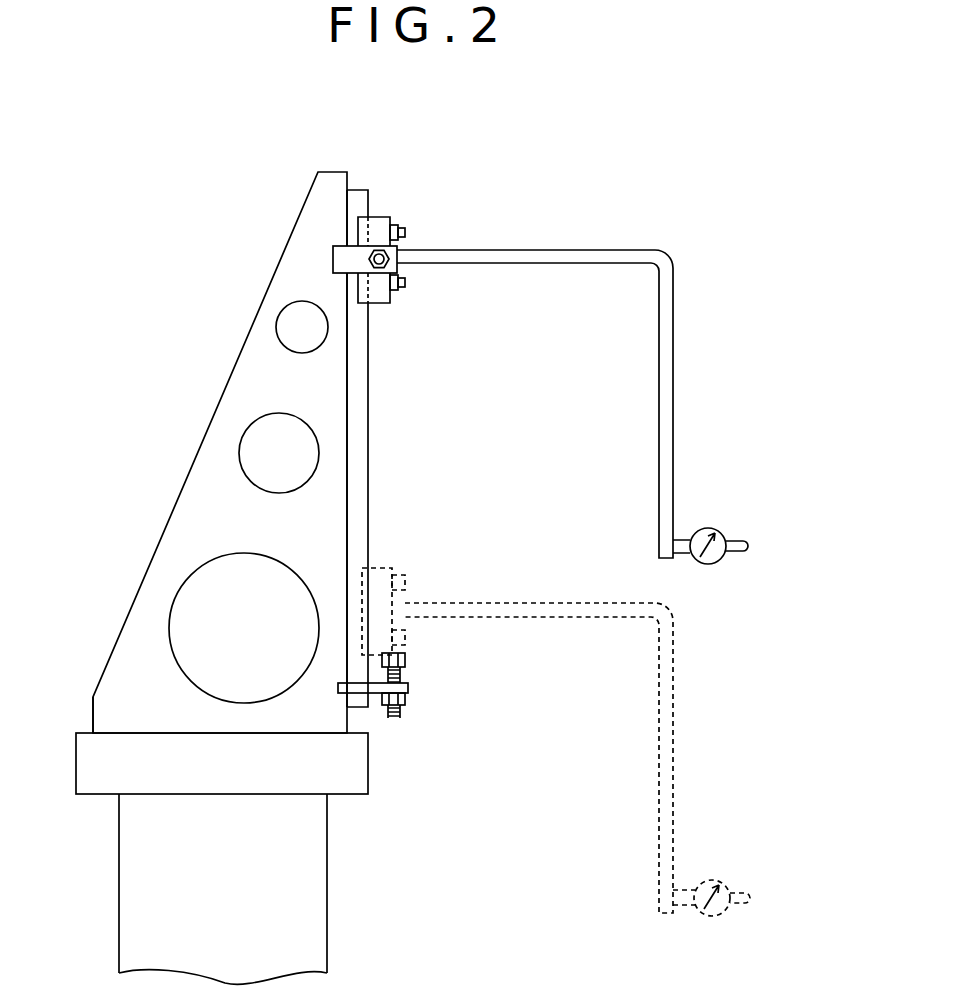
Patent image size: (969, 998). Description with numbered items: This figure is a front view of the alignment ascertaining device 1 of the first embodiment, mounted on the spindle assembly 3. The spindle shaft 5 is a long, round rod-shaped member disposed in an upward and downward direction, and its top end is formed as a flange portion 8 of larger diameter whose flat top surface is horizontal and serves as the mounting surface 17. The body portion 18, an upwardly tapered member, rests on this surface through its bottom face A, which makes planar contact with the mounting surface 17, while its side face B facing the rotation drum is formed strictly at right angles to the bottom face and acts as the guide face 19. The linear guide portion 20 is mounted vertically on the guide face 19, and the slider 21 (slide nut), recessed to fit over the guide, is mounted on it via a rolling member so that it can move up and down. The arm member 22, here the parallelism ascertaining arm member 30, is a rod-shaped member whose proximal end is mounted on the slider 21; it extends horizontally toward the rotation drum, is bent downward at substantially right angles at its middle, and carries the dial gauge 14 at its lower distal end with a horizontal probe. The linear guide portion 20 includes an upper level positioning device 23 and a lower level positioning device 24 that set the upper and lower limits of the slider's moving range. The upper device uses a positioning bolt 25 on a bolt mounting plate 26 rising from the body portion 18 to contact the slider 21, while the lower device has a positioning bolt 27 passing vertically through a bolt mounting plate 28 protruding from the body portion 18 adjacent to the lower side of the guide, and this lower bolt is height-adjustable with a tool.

The alignment ascertaining device 1 is at (578, 207).
The spindle assembly 3 is at (327, 913).
The spindle shaft 5 is at (278, 889).
The flange portion 8 is at (369, 764).
The dial gauge 14 is at (708, 527).
The mounting surface 17 is at (113, 732).
The body portion 18 is at (200, 500).
The guide face 19 is at (352, 497).
The linear guide portion 20 is at (369, 398).
The slider 21 is at (374, 216).
The arm member 22 is at (663, 329).
The upper level positioning device 23 is at (305, 207).
The lower level positioning device 24 is at (432, 679).
The positioning bolt 25 is at (375, 248).
The bolt mounting plate 26 is at (332, 257).
The positioning bolt 27 is at (405, 660).
The bolt mounting plate 28 is at (408, 688).
The parallelism ascertaining arm member 30 is at (535, 404).
The bottom face A is at (142, 735).
The side face B is at (349, 176).